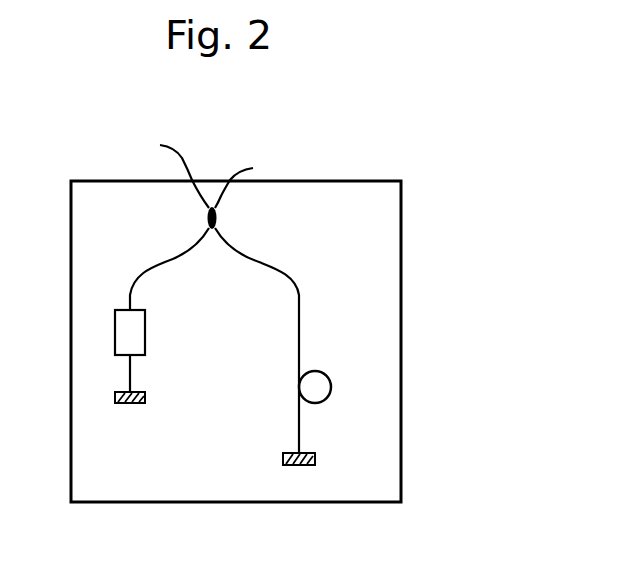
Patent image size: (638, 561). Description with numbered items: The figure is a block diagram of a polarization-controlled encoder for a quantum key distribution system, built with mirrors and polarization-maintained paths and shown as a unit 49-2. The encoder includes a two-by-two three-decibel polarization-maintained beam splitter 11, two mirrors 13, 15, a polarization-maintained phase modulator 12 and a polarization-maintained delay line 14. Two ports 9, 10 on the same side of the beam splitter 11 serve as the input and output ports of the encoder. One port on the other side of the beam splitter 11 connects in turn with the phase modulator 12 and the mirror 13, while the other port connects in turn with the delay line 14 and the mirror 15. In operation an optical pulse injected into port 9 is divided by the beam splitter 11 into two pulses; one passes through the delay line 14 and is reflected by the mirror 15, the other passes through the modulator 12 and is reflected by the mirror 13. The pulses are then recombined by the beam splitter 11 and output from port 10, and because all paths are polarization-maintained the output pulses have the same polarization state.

The port 9 is at (167, 160).
The port 10 is at (261, 164).
The polarization-maintained beam splitter 11 is at (188, 217).
The polarization-maintained phase modulator 12 is at (155, 329).
The mirror 13 is at (155, 391).
The polarization-maintained delay line 14 is at (341, 387).
The mirror 15 is at (325, 452).
The optical unit 49-2 is at (290, 341).